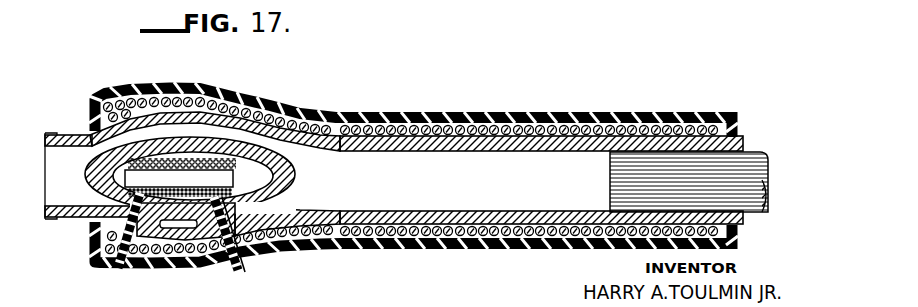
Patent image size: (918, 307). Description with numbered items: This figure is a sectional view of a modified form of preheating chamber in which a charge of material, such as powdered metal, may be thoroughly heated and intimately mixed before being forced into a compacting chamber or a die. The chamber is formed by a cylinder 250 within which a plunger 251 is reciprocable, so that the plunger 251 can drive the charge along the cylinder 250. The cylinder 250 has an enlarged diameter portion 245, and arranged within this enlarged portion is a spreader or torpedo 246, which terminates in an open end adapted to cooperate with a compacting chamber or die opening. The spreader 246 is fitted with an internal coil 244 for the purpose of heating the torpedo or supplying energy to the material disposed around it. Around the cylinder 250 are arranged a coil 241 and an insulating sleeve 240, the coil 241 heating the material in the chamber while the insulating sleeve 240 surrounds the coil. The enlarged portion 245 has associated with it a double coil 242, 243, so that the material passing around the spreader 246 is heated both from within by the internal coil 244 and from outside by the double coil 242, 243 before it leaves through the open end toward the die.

The insulating sleeve 240 is at (566, 99).
The coil 241 is at (463, 124).
The double coil 242 is at (247, 112).
The double coil 243 is at (226, 93).
The internal coil 244 is at (107, 170).
The enlarged diameter portion 245 is at (160, 116).
The spreader 246 is at (271, 178).
The cylinder 250 is at (376, 140).
The plunger 251 is at (620, 176).